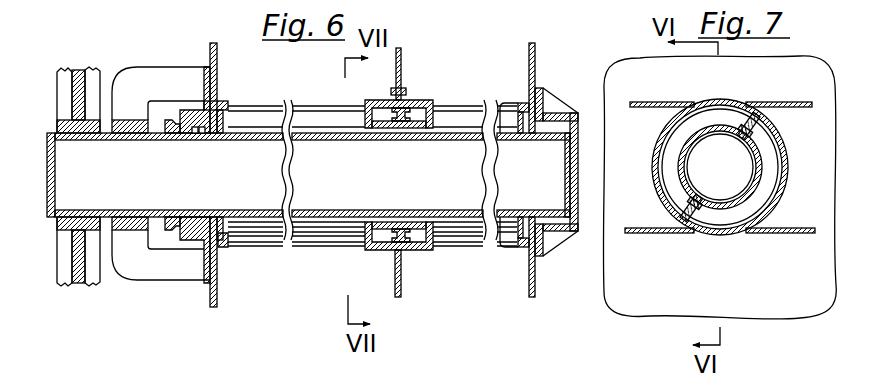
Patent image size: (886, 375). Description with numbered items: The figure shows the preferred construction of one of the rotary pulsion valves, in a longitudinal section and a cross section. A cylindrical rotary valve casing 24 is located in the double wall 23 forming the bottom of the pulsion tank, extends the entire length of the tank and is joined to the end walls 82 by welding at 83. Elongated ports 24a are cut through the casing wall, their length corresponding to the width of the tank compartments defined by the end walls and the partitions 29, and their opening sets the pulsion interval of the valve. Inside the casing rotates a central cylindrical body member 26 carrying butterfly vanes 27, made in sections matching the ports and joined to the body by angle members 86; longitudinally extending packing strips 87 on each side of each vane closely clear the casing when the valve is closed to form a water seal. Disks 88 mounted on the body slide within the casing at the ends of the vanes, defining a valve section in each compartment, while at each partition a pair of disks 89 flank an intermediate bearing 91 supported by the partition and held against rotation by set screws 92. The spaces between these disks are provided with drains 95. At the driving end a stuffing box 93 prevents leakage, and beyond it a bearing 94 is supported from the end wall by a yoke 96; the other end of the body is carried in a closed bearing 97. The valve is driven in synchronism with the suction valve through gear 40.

In FIG. 6, the rotary valve casing 24 is at (229, 255).
In FIG. 7, the rotary valve casing 24 is at (783, 203).
In FIG. 6, the elongated port 24a is at (312, 106).
In FIG. 7, the elongated port 24a is at (719, 99).
In FIG. 7, the double wall 23 is at (788, 103).
In FIG. 7, the central cylindrical body member 26 is at (697, 141).
In FIG. 7, the butterfly vane 27 is at (756, 126).
In FIG. 6, the partition 29 is at (401, 60).
In FIG. 6, the gear 40 is at (83, 285).
In FIG. 6, the end wall 82 is at (213, 43).
In FIG. 6, the weld 83 is at (221, 104).
In FIG. 7, the angle member 86 is at (718, 212).
In FIG. 7, the packing strip 87 is at (699, 233).
In FIG. 6, the disk 88 is at (223, 246).
In FIG. 6, the disk 89 is at (369, 122).
In FIG. 6, the intermediate bearing 91 is at (396, 124).
In FIG. 6, the set screw 92 is at (404, 99).
In FIG. 6, the stuffing box 93 is at (193, 224).
In FIG. 6, the bearing 94 is at (132, 232).
In FIG. 6, the drain 95 is at (382, 252).
In FIG. 6, the yoke 96 is at (194, 278).
In FIG. 6, the closed bearing 97 is at (547, 115).